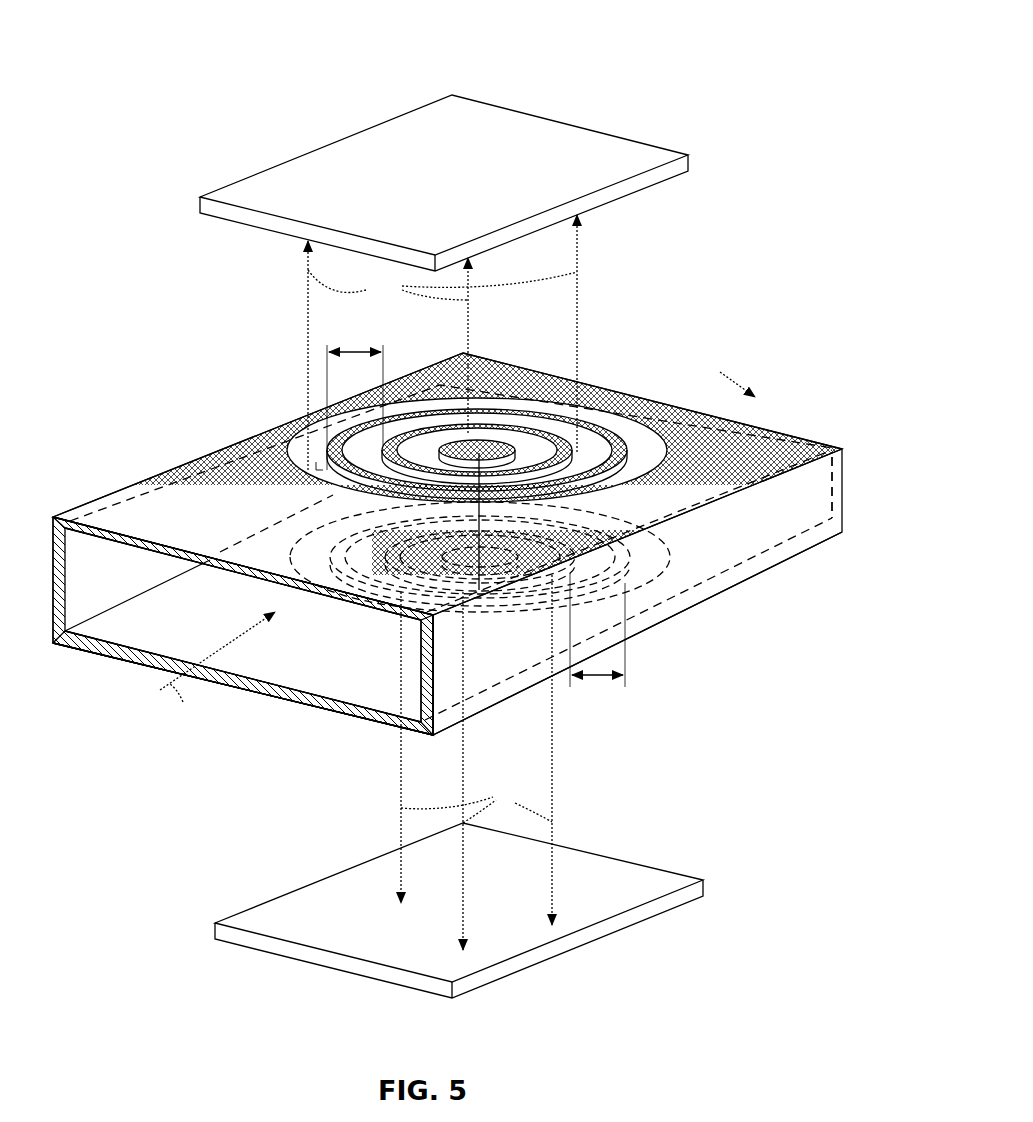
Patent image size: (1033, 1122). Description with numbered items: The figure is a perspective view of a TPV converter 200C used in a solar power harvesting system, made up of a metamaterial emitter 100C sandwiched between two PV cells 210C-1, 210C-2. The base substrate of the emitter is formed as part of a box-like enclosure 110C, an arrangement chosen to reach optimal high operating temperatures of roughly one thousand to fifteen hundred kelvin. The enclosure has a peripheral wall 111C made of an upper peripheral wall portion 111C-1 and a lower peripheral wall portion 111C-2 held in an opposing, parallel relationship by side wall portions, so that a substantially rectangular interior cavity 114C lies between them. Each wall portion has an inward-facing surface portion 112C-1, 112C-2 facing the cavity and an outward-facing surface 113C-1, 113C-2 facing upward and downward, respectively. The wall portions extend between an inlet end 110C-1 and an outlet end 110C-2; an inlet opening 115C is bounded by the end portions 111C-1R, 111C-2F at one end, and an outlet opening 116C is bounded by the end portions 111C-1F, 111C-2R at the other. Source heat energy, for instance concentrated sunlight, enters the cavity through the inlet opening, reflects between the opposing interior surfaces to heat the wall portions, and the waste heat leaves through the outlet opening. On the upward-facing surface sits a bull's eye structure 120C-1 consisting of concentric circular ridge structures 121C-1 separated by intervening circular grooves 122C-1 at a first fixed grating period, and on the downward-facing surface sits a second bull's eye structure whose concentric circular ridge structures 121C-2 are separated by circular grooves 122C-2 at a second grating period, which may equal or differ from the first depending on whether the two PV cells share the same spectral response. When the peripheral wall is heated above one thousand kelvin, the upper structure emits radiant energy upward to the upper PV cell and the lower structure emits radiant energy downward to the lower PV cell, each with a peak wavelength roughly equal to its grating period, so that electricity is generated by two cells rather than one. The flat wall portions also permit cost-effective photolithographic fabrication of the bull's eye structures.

The TPV converter 200C is at (183, 97).
The PV cell 210C-1 is at (603, 143).
The PV cell 210C-2 is at (640, 868).
The metamaterial emitter 100C is at (198, 373).
The box-like enclosure 110C is at (203, 455).
The inlet end 110C-1 is at (293, 740).
The outlet end 110C-2 is at (677, 397).
The peripheral wall 111C is at (437, 690).
The upper peripheral wall portion 111C-1 is at (128, 540).
The lower peripheral wall portion 111C-2 is at (245, 687).
The rear end portion 111C-1F is at (78, 532).
The front end portion 111C-1R is at (583, 383).
The front end portion 111C-2F is at (168, 672).
The end portion 111C-2R is at (763, 510).
The inward-facing surface portion 112C-1 is at (138, 557).
The inward-facing surface portion 112C-2 is at (180, 653).
The outward-facing surface 113C-1 is at (125, 515).
The outward-facing surface 113C-2 is at (395, 732).
The interior cavity 114C is at (388, 632).
The inlet opening 115C is at (365, 692).
The outlet opening 116C is at (822, 478).
The bull's eye structure 120C-1 is at (507, 400).
The concentric circular ridge structures 121C-1 is at (345, 478).
The circular grooves 122C-1 is at (413, 450).
The concentric circular ridge structures 121C-2 is at (663, 572).
The circular grooves 122C-2 is at (603, 566).